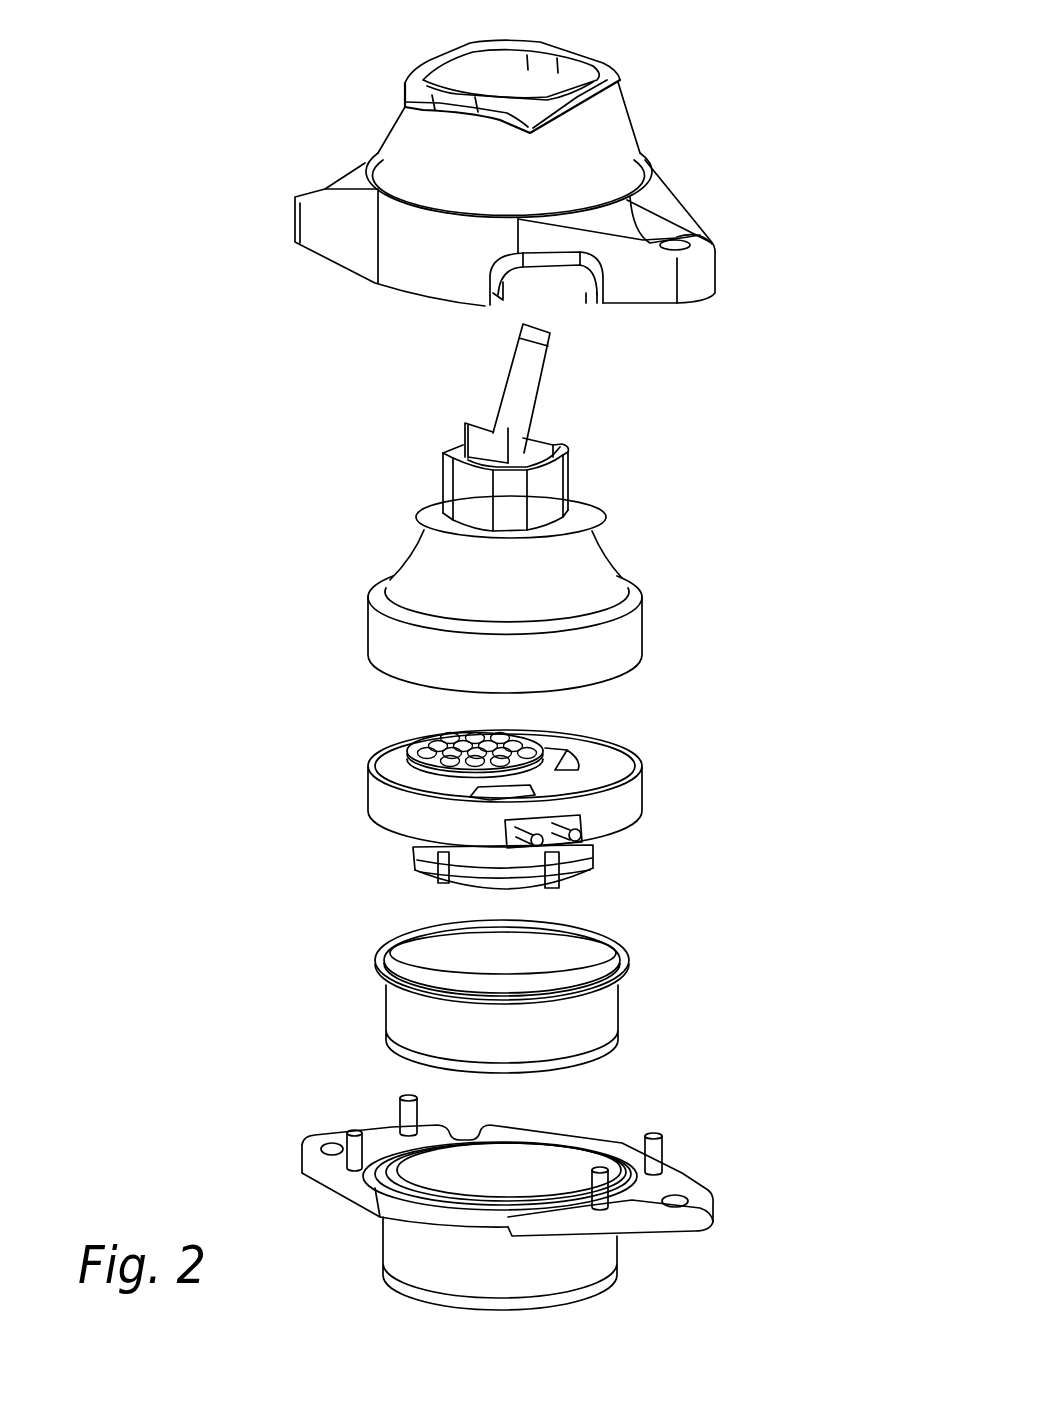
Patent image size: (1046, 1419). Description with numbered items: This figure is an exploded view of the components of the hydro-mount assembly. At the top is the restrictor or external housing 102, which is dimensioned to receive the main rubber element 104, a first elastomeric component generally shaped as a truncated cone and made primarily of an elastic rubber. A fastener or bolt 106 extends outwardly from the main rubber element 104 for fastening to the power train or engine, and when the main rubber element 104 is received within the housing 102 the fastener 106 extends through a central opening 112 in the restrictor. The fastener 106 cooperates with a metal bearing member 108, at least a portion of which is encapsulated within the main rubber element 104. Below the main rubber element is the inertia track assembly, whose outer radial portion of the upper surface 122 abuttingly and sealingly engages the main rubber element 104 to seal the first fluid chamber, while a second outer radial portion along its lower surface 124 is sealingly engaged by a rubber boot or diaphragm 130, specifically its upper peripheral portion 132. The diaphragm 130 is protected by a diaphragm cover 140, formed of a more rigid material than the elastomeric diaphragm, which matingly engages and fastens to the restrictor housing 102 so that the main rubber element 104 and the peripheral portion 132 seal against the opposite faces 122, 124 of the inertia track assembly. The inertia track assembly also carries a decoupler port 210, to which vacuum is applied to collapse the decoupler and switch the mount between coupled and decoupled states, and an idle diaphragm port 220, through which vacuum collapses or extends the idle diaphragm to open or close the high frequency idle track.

The restrictor or external housing 102 is at (553, 162).
The main rubber element 104 is at (559, 508).
The fastener or bolt 106 is at (533, 375).
The metal bearing member 108 is at (487, 438).
The central opening 112 is at (585, 52).
The outer radial portion of upper surface of inertia track assembly 122 is at (484, 816).
The second outer radial portion of lower surface of inertia track assembly 124 is at (378, 836).
The rubber boot or diaphragm 130 is at (501, 987).
The upper peripheral portion of the diaphragm 132 is at (610, 943).
The diaphragm cover 140 is at (610, 1250).
The decoupler port 210 is at (537, 846).
The idle diaphragm port 220 is at (582, 836).